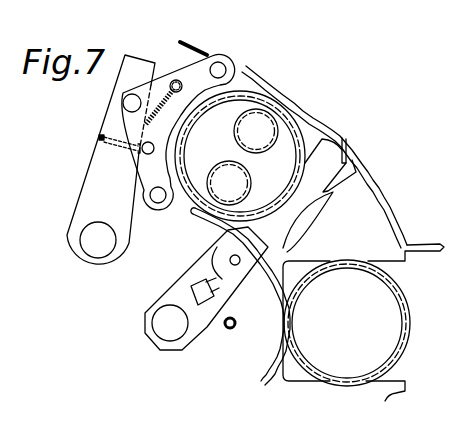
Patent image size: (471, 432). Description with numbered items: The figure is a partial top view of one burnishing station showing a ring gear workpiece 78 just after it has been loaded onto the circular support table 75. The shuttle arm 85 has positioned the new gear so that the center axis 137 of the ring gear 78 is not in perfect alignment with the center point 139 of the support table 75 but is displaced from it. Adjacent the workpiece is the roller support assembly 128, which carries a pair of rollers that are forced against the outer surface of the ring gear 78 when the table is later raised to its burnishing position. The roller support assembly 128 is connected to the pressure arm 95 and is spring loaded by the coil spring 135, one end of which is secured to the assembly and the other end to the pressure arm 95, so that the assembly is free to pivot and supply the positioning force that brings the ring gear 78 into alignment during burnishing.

The roller support assembly 128 is at (182, 77).
The coil spring 135 is at (146, 119).
The pressure arm 95 is at (101, 171).
The center axis of the ring gear 137 is at (242, 157).
The center point of the support table 139 is at (260, 163).
The ring gear workpiece 78 is at (303, 138).
The support table 75 is at (210, 227).
The shuttle arm 85 is at (197, 275).